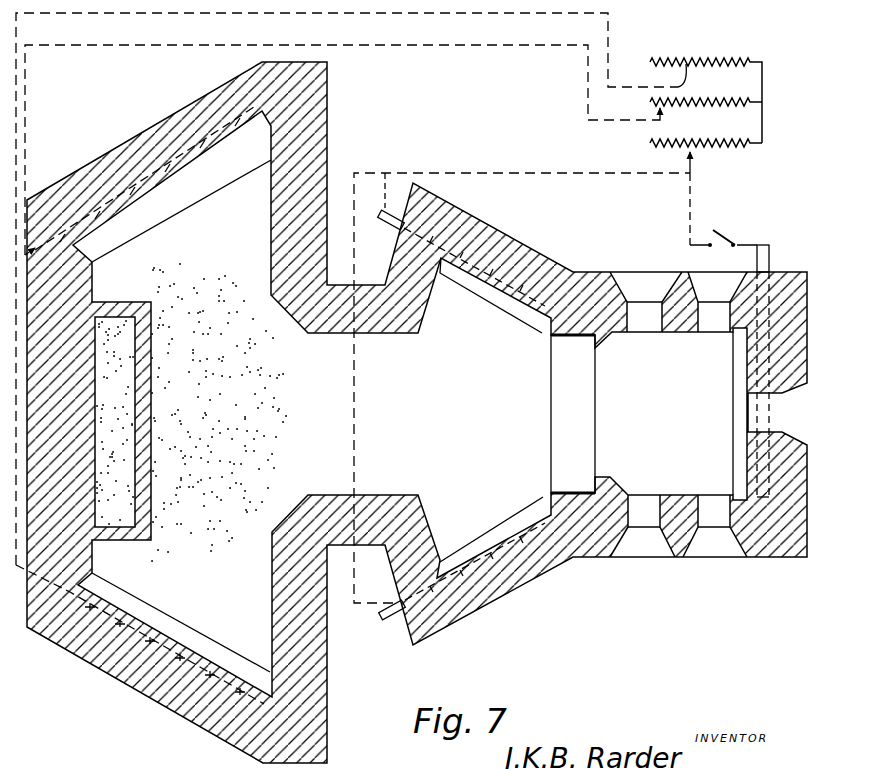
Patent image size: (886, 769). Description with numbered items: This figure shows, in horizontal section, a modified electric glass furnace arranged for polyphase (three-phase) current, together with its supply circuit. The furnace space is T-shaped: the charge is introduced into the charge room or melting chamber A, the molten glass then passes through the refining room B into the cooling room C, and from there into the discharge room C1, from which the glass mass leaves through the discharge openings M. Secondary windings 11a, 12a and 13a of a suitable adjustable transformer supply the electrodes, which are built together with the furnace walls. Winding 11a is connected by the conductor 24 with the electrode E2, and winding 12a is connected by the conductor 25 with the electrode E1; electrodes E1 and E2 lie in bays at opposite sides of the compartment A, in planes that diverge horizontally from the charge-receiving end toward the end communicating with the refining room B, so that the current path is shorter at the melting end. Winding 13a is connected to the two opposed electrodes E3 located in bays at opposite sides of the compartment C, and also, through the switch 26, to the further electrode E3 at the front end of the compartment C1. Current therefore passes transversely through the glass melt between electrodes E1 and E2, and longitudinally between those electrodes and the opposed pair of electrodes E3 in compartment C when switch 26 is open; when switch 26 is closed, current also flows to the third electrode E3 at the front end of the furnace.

The conductor 24 is at (462, 14).
The conductor 25 is at (455, 45).
The switch 26 is at (723, 230).
The secondary winding 11a is at (704, 62).
The secondary winding 12a is at (732, 100).
The secondary winding 13a is at (735, 143).
The electrode E1 is at (142, 194).
The electrode E2 is at (153, 645).
The electrode E3 is at (440, 264).
The charge room A is at (191, 412).
The refining room B is at (367, 415).
The cooling room C is at (474, 415).
The discharge room C1 is at (672, 417).
The discharge openings M is at (700, 282).